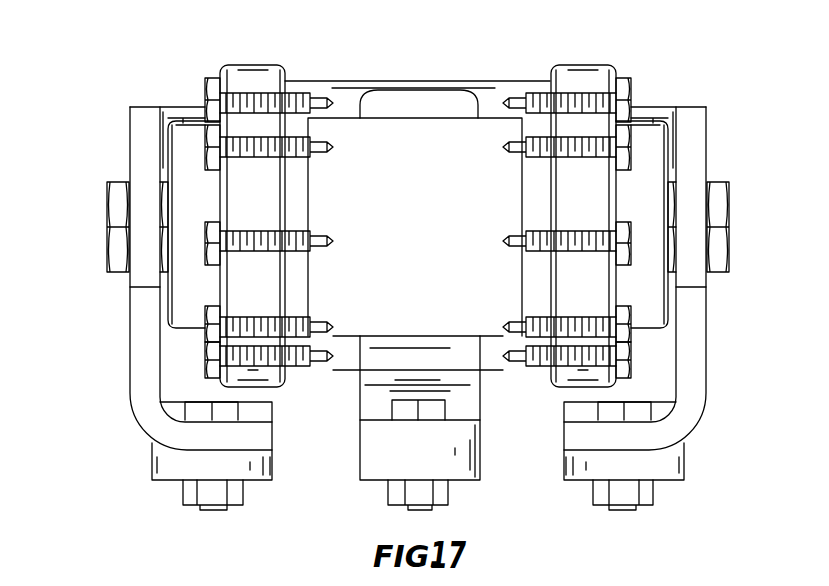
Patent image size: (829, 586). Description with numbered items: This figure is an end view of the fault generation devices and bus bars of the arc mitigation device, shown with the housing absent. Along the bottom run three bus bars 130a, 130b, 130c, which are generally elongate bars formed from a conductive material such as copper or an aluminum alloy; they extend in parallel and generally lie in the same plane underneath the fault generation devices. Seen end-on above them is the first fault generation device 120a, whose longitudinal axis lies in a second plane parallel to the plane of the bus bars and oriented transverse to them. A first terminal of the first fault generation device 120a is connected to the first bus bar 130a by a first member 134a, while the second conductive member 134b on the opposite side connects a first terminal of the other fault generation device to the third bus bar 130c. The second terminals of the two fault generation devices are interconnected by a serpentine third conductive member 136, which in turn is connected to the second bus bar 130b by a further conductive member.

The first fault generation device 120a is at (492, 87).
The first member 134a is at (695, 172).
The second conductive member 134b is at (145, 355).
The serpentine third conductive member 136 is at (145, 192).
The first bus bar 130a is at (669, 470).
The second bus bar 130b is at (462, 472).
The third bus bar 130c is at (255, 472).